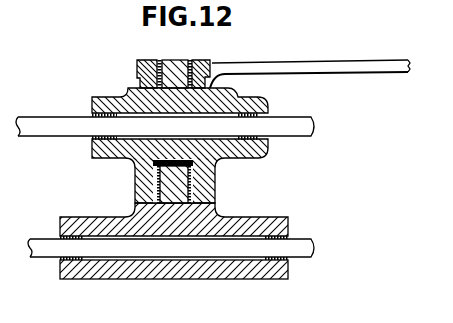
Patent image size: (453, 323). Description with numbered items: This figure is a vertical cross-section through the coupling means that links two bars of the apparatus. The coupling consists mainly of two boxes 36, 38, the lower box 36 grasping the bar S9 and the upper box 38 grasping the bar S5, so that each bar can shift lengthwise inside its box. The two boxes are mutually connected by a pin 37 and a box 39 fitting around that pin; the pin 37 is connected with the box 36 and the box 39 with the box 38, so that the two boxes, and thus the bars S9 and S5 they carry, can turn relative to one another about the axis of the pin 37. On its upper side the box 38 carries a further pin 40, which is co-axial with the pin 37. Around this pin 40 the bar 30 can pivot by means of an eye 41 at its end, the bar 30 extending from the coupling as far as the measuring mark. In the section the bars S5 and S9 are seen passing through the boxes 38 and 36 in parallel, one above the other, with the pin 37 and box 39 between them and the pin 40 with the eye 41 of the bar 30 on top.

The bar 30 is at (317, 67).
The box 36 is at (68, 217).
The pin 37 is at (179, 182).
The box 38 is at (119, 157).
The box 39 is at (138, 186).
The pin 40 is at (190, 63).
The eye 41 is at (137, 66).
The bar S5 is at (290, 125).
The bar S9 is at (303, 244).